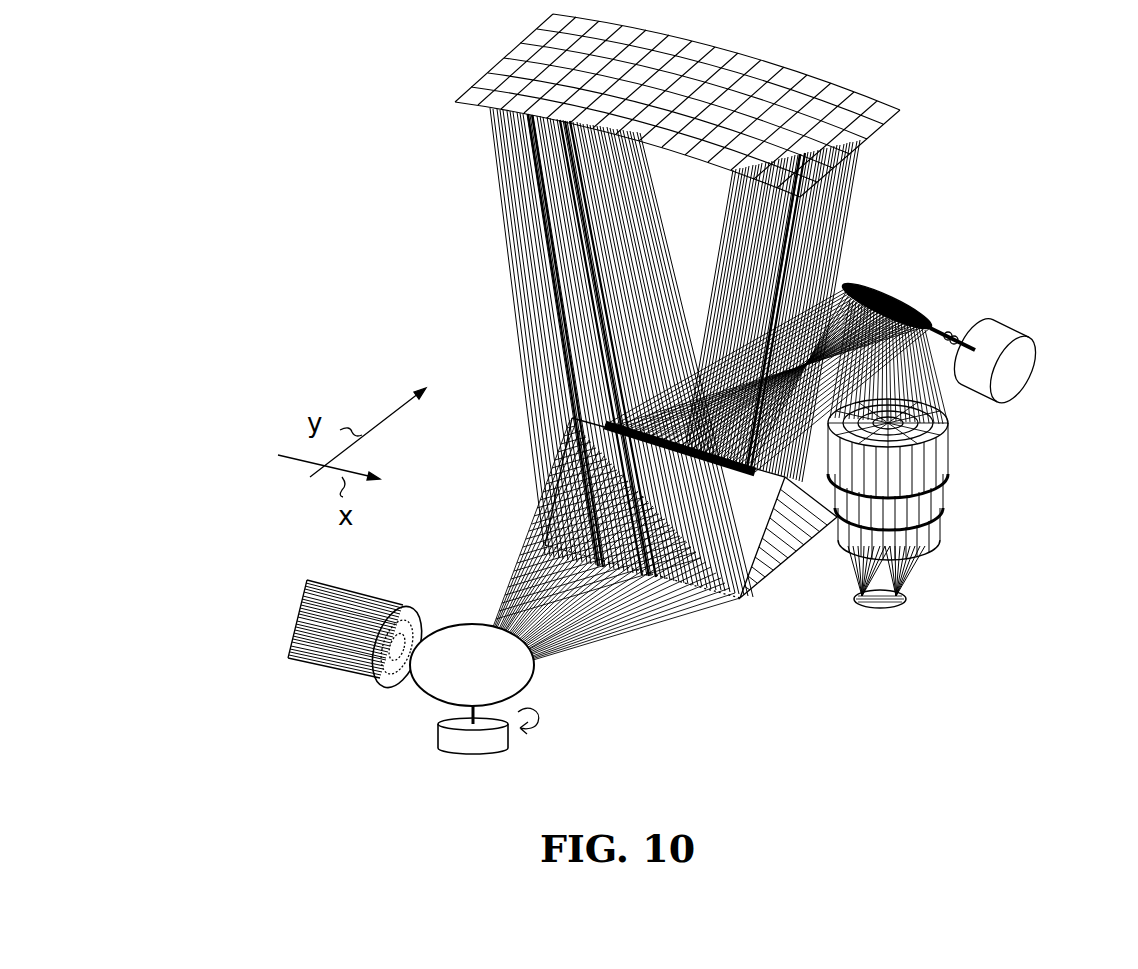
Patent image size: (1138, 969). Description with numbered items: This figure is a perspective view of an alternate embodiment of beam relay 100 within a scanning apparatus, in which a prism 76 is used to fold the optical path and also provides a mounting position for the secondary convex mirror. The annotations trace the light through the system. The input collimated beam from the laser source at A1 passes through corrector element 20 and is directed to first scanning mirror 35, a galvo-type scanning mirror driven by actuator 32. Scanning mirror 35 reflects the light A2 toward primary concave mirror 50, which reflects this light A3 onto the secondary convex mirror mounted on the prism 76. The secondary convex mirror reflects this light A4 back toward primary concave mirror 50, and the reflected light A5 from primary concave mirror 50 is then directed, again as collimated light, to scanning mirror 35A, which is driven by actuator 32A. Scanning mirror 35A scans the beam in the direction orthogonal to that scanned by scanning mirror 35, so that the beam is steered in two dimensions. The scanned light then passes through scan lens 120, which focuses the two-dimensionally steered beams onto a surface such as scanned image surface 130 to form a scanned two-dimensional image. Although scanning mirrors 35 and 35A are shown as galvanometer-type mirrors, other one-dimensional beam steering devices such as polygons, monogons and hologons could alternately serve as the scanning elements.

The beam relay 100 is at (256, 128).
The primary concave mirror 50 is at (890, 125).
The light reflected from primary concave mirror A3 is at (548, 198).
The light reflected from secondary convex mirror A4 is at (602, 223).
The reflected light from primary concave mirror A5 is at (660, 470).
The scanning mirror 35A is at (893, 298).
The actuator 32A is at (1037, 365).
The scan lens 120 is at (965, 412).
The scanned image surface 130 is at (906, 600).
The prism 76 is at (783, 562).
The light reflected from scanning mirror A2 is at (505, 560).
The input collimated beam location A1 is at (303, 660).
The corrector element 20 is at (383, 688).
The first scanning mirror 35 is at (427, 700).
The actuator 32 is at (440, 735).